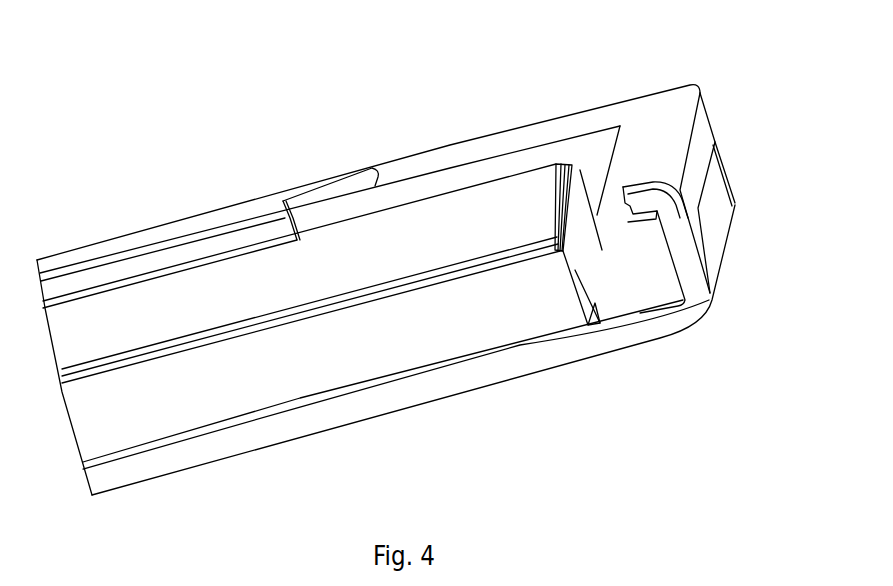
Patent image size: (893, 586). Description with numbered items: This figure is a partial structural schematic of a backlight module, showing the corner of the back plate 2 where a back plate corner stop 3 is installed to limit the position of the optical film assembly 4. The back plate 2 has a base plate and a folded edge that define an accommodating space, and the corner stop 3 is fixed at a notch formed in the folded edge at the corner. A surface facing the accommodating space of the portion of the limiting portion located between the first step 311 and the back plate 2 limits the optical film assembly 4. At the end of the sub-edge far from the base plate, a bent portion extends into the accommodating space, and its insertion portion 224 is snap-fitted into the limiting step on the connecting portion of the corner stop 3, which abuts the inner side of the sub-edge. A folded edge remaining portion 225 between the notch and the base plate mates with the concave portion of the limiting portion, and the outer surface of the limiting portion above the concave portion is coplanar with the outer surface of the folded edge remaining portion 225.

The back plate 2 is at (502, 399).
The back plate corner stop 3 is at (685, 74).
The optical film assembly 4 is at (370, 333).
The first step 311 is at (216, 197).
The insertion portion 224 is at (634, 204).
The folded edge remaining portion 225 is at (722, 207).